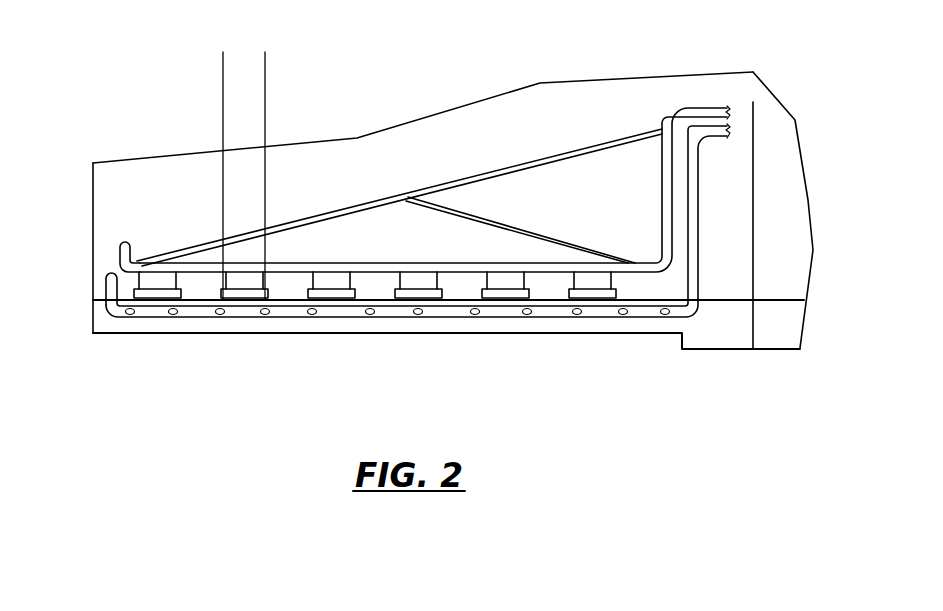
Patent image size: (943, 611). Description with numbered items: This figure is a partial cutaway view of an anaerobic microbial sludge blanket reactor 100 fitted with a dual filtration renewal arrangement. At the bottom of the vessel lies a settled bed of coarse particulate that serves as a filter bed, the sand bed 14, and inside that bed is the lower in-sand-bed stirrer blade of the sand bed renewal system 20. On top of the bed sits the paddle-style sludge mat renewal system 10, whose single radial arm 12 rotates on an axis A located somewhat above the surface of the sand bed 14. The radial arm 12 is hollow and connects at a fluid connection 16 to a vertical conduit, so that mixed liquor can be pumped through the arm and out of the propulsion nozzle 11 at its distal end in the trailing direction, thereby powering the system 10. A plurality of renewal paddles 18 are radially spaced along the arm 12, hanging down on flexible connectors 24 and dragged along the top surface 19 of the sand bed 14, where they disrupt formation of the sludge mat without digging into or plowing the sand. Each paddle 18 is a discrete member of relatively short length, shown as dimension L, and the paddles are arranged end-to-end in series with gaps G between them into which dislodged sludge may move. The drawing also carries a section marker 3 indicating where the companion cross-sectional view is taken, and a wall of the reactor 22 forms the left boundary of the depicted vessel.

The sludge mat renewal system 10 is at (187, 218).
The propulsion nozzle 11 is at (130, 252).
The radial arm 12 is at (478, 262).
The sand bed 14 is at (644, 303).
The fluid connection 16 is at (702, 112).
The renewal paddles 18 is at (333, 295).
The top surface of the sand bed 19 is at (103, 298).
The sand bed renewal system 20 is at (203, 340).
The side wall 22 is at (98, 218).
The flexible connectors 24 is at (432, 283).
The anaerobic microbial sludge blanket reactor 100 is at (468, 138).
The axis A is at (753, 167).
The gaps G is at (547, 292).
The dimension L is at (318, 65).
The section line 3- 3 is at (385, 245).